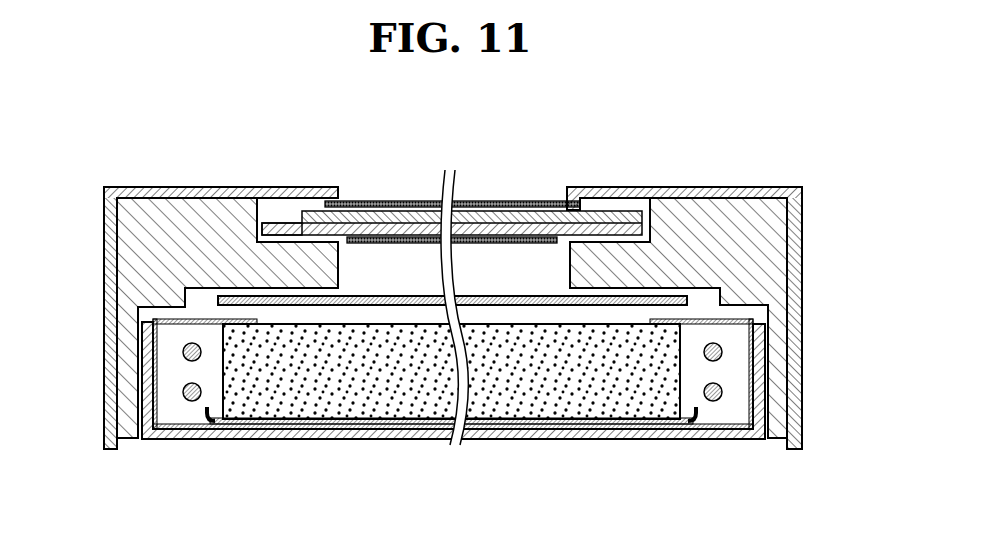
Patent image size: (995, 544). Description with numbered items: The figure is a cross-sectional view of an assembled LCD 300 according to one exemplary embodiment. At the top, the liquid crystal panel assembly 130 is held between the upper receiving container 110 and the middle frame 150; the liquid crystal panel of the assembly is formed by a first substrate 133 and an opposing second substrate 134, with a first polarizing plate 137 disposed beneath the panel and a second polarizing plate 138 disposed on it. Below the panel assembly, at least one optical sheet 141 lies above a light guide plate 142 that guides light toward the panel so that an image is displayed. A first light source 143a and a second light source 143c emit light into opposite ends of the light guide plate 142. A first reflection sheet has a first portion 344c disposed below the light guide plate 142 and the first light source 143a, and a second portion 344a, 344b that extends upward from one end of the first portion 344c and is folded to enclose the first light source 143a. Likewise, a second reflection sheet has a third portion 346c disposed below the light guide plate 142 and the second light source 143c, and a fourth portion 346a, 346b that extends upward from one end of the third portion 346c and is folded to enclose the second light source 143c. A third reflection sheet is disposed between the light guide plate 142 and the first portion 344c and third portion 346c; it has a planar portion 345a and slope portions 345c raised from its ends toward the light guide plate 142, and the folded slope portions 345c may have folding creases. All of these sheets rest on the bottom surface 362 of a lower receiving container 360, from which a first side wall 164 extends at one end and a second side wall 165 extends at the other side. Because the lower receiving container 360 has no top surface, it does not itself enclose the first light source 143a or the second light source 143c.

The upper receiving container 110 is at (208, 190).
The liquid crystal panel assembly 130 is at (451, 167).
The first substrate 133 is at (270, 224).
The second substrate 134 is at (318, 207).
The first polarizing plate 137 is at (375, 220).
The second polarizing plate 138 is at (452, 184).
The optical sheet 141 is at (690, 299).
The light guide plate 142 is at (507, 333).
The first light source 143a is at (191, 402).
The second light source 143c is at (722, 398).
The middle frame 150 is at (140, 248).
The first side wall 164 is at (148, 397).
The second side wall 165 is at (755, 397).
The LCD 300 is at (665, 100).
The second portion of first reflection sheet 344a is at (262, 440).
The second portion of first reflection sheet 344b is at (146, 358).
The first portion of first reflection sheet 344c is at (303, 440).
The planar portion 345a is at (427, 440).
The slope portion 345c is at (700, 440).
The fourth portion of second reflection sheet 346a is at (720, 319).
The fourth portion of second reflection sheet 346b is at (754, 362).
The third portion of second reflection sheet 346c is at (617, 440).
The lower receiving container 360 is at (451, 423).
The bottom surface 362 is at (528, 440).